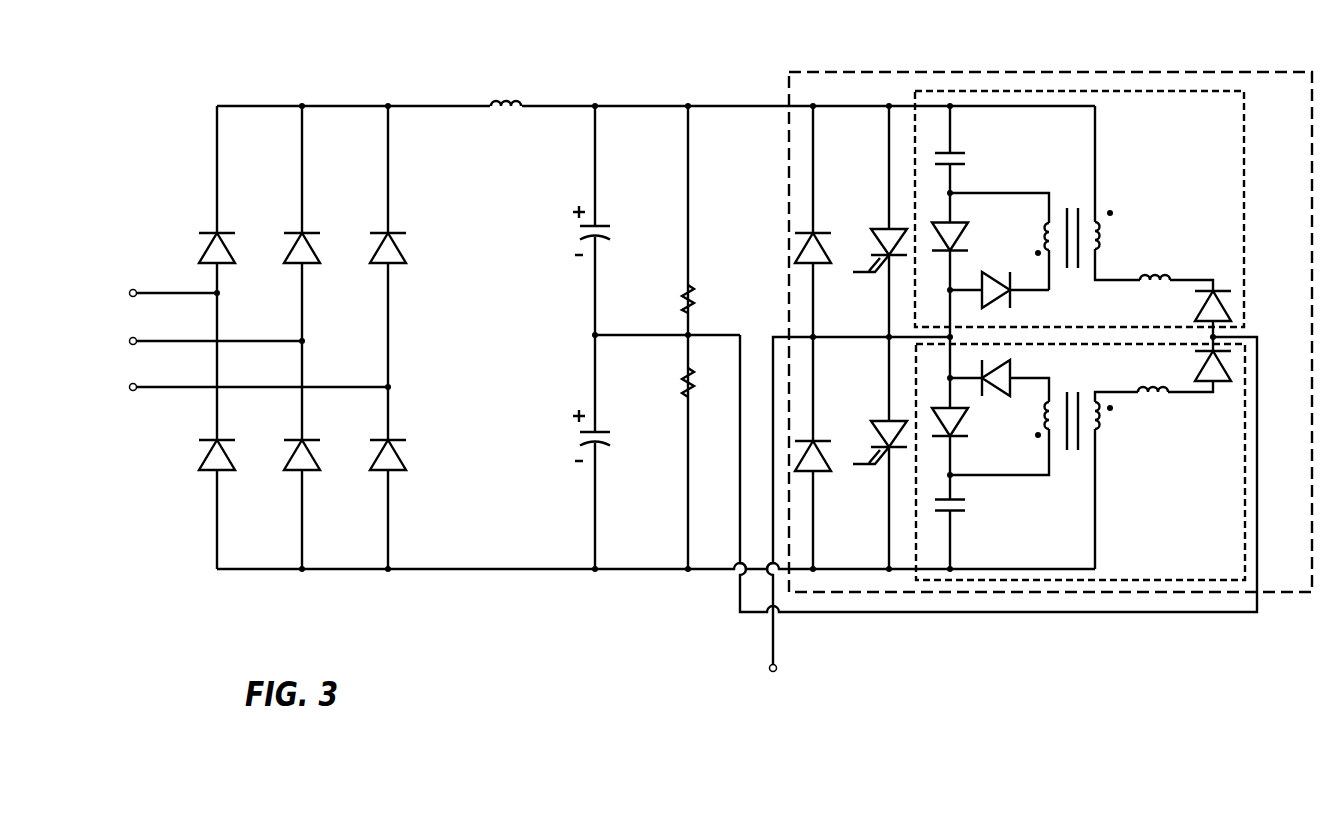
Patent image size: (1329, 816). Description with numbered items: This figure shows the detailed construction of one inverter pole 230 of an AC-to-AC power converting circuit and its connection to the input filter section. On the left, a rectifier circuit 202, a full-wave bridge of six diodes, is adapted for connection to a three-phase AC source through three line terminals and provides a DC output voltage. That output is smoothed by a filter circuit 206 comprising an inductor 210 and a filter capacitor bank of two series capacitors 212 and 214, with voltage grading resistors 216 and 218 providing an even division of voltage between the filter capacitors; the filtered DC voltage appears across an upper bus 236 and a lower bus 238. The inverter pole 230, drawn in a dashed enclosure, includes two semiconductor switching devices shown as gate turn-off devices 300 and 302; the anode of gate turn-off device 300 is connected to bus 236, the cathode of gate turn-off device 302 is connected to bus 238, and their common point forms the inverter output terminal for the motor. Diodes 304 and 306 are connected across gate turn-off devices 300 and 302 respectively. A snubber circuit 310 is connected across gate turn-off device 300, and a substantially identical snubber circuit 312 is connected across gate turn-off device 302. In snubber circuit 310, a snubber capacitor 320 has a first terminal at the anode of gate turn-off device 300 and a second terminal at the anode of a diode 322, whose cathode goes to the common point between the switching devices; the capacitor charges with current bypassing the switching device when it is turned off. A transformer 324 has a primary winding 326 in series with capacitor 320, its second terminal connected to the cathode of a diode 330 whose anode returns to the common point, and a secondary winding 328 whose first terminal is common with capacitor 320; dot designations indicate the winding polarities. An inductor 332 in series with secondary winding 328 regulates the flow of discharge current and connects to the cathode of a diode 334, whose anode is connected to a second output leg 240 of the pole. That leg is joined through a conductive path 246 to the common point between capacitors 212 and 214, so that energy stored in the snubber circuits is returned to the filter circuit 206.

The rectifier circuit 202 is at (200, 80).
The filter circuit 206 is at (612, 295).
The inductor 210 is at (506, 110).
The capacitor 212 is at (585, 228).
The capacitor 214 is at (585, 433).
The voltage grading resistor 216 is at (682, 302).
The voltage grading resistor 218 is at (682, 386).
The inverter pole 230 is at (942, 70).
The bus 236 is at (727, 106).
The bus 238 is at (713, 571).
The second output leg 240 is at (1262, 346).
The conductive path 246 is at (740, 602).
The gate turn-off device 300 is at (884, 230).
The gate turn-off device 302 is at (884, 420).
The diode 304 is at (818, 264).
The diode 306 is at (818, 471).
The snubber circuit 310 is at (1252, 192).
The snubber circuit 312 is at (1252, 507).
The snubber capacitor 320 is at (962, 152).
The diode 322 is at (967, 224).
The transformer 324 is at (1057, 198).
The primary winding 326 is at (1040, 222).
The secondary winding 328 is at (1100, 233).
The diode 330 is at (1012, 300).
The inductor 332 is at (1152, 276).
The diode 334 is at (1200, 316).